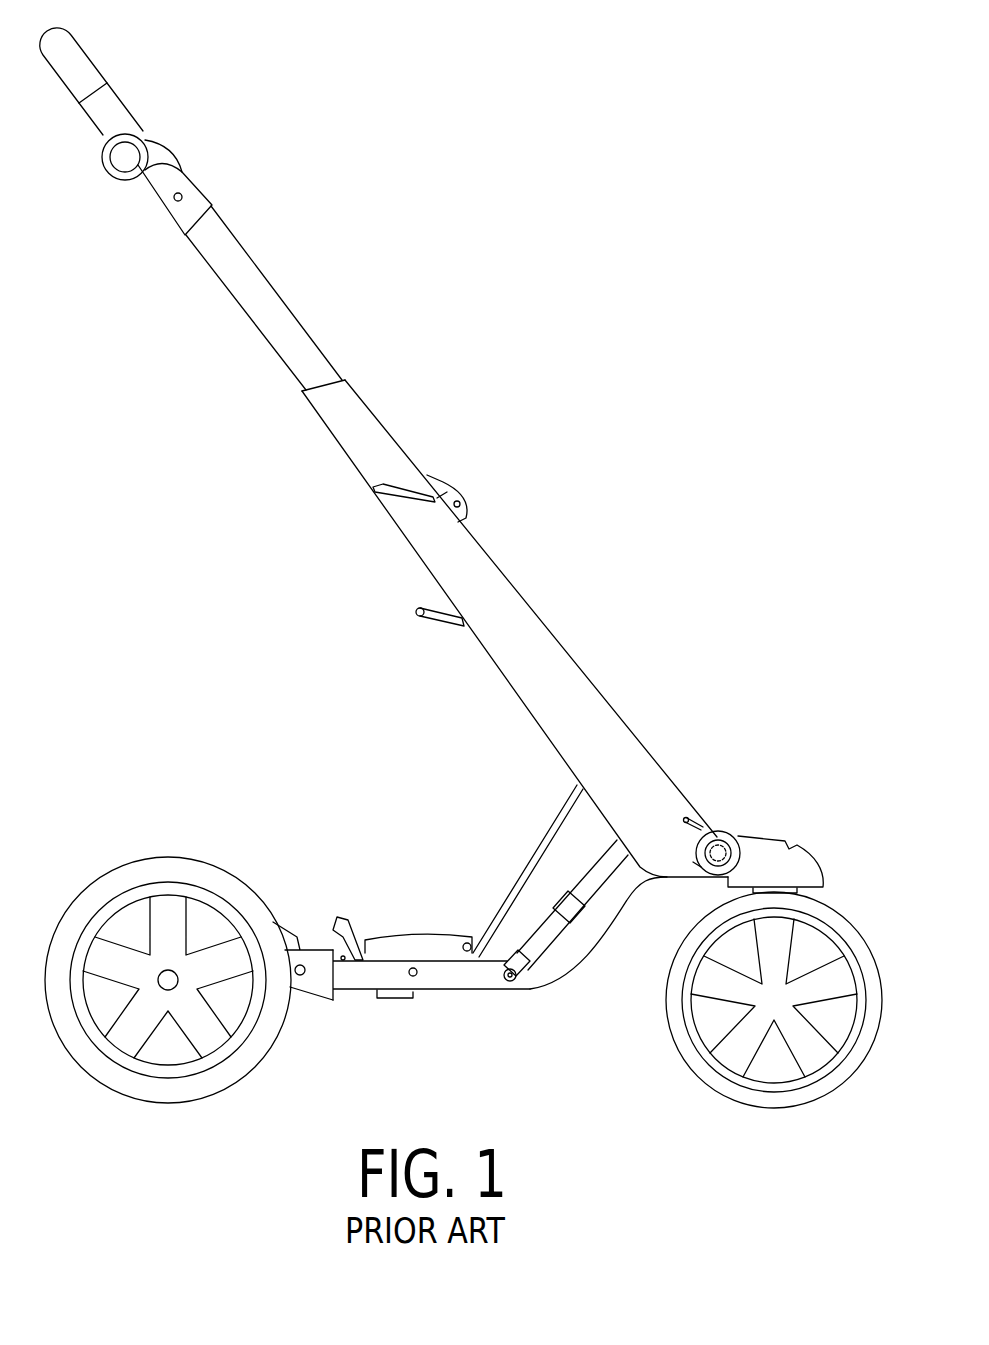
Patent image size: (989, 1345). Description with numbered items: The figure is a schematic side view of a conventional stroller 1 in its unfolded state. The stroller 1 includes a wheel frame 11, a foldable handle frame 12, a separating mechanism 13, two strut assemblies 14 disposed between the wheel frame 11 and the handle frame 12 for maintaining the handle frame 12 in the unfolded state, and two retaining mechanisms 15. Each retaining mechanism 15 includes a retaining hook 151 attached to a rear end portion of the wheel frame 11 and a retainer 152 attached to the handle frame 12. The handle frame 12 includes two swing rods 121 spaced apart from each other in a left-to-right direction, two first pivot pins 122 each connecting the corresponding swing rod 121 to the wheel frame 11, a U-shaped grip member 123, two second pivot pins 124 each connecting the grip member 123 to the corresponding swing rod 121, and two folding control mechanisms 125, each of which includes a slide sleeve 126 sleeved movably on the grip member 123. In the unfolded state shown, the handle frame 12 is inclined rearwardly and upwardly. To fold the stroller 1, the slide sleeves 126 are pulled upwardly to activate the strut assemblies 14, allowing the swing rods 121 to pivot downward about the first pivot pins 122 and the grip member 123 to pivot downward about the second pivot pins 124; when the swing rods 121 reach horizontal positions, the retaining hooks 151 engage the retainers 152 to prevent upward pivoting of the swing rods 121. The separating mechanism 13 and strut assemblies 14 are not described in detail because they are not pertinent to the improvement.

The conventional stroller 1 is at (510, 387).
The wheel frame 11 is at (570, 973).
The foldable handle frame 12 is at (557, 607).
The swing rod 121 is at (598, 722).
The first pivot pin 122 is at (727, 833).
The U-shaped grip member 123 is at (253, 280).
The second pivot pin 124 is at (463, 497).
The folding control mechanism 125 is at (167, 223).
The slide sleeve 126 is at (200, 205).
The separating mechanism 13 is at (585, 907).
The strut assembly 14 is at (455, 930).
The retaining mechanism 15 is at (272, 812).
The retaining hook 151 is at (358, 968).
The retainer 152 is at (417, 617).